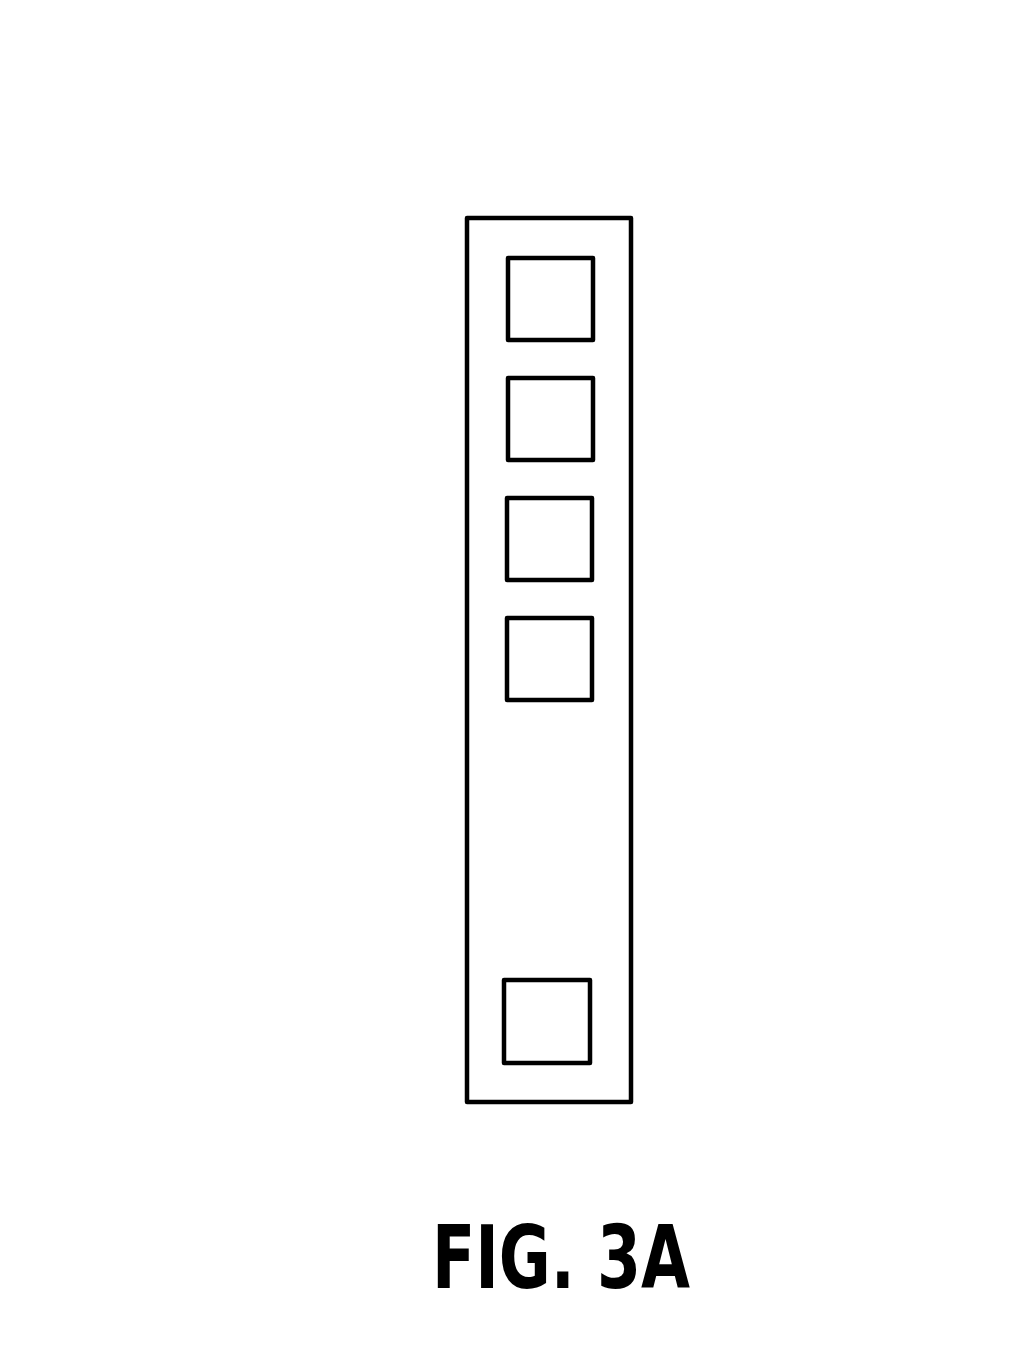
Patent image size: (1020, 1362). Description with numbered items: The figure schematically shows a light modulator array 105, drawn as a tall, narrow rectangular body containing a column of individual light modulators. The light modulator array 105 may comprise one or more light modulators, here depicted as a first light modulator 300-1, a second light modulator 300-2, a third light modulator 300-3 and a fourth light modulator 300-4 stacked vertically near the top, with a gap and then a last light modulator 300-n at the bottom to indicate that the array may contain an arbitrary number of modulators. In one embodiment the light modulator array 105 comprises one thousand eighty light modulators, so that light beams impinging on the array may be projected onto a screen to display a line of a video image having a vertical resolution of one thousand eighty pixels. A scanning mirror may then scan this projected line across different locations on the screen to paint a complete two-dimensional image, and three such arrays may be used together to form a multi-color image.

The light modulator array 105 is at (287, 222).
The light modulator 300-1 is at (593, 300).
The light modulator 300-2 is at (593, 420).
The light modulator 300-3 is at (592, 540).
The light modulator 300-4 is at (592, 658).
The light modulator 300-n is at (590, 1017).